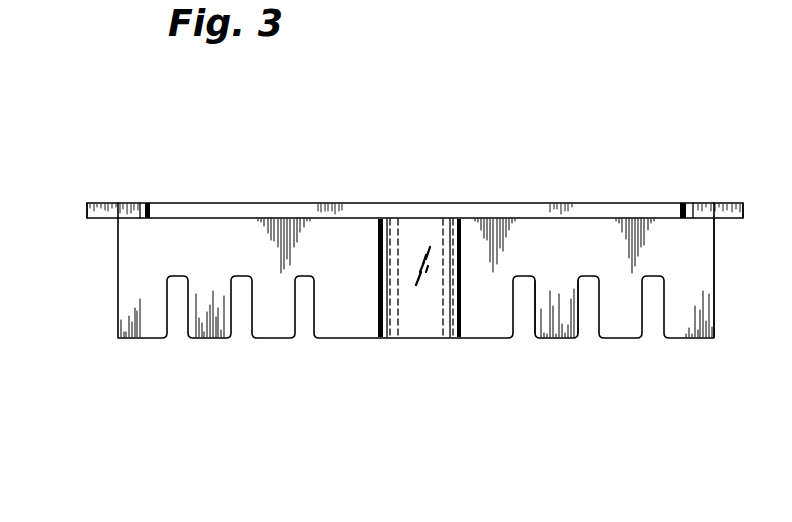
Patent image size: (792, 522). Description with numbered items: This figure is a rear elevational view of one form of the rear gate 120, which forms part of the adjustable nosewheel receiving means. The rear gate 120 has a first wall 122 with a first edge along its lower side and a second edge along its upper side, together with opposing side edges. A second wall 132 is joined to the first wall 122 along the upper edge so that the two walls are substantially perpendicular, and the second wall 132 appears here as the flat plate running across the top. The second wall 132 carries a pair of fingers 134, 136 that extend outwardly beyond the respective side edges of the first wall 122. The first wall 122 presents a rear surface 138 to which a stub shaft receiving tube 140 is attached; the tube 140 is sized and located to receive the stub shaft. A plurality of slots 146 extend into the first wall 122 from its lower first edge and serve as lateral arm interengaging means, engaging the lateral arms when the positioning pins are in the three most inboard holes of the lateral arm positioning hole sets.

The rear gate 120 is at (198, 375).
The first wall 122 is at (147, 271).
The second wall 132 is at (510, 213).
The finger 134 is at (732, 202).
The finger 136 is at (104, 210).
The rear surface 138 is at (685, 248).
The stub shaft receiving tube 140 is at (413, 320).
The slots 146 is at (578, 308).